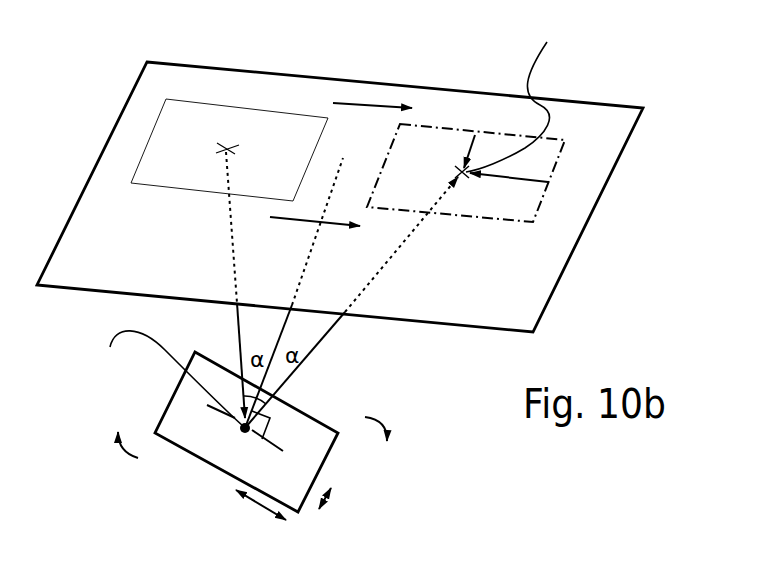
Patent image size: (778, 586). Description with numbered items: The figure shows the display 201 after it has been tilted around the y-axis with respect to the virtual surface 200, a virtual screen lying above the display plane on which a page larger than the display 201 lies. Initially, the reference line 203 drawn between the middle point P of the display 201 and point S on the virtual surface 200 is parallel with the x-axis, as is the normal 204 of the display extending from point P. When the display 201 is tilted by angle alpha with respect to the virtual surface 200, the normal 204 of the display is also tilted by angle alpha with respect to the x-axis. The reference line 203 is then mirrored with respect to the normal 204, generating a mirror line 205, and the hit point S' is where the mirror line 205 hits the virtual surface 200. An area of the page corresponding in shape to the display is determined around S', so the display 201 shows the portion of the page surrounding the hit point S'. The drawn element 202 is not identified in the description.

The virtual surface 200 is at (565, 268).
The display 201 is at (200, 462).
The movement of displayed image 202 is at (425, 153).
The reference line 203 is at (233, 257).
The normal of the display 204 is at (302, 275).
The mirror line 205 is at (405, 240).